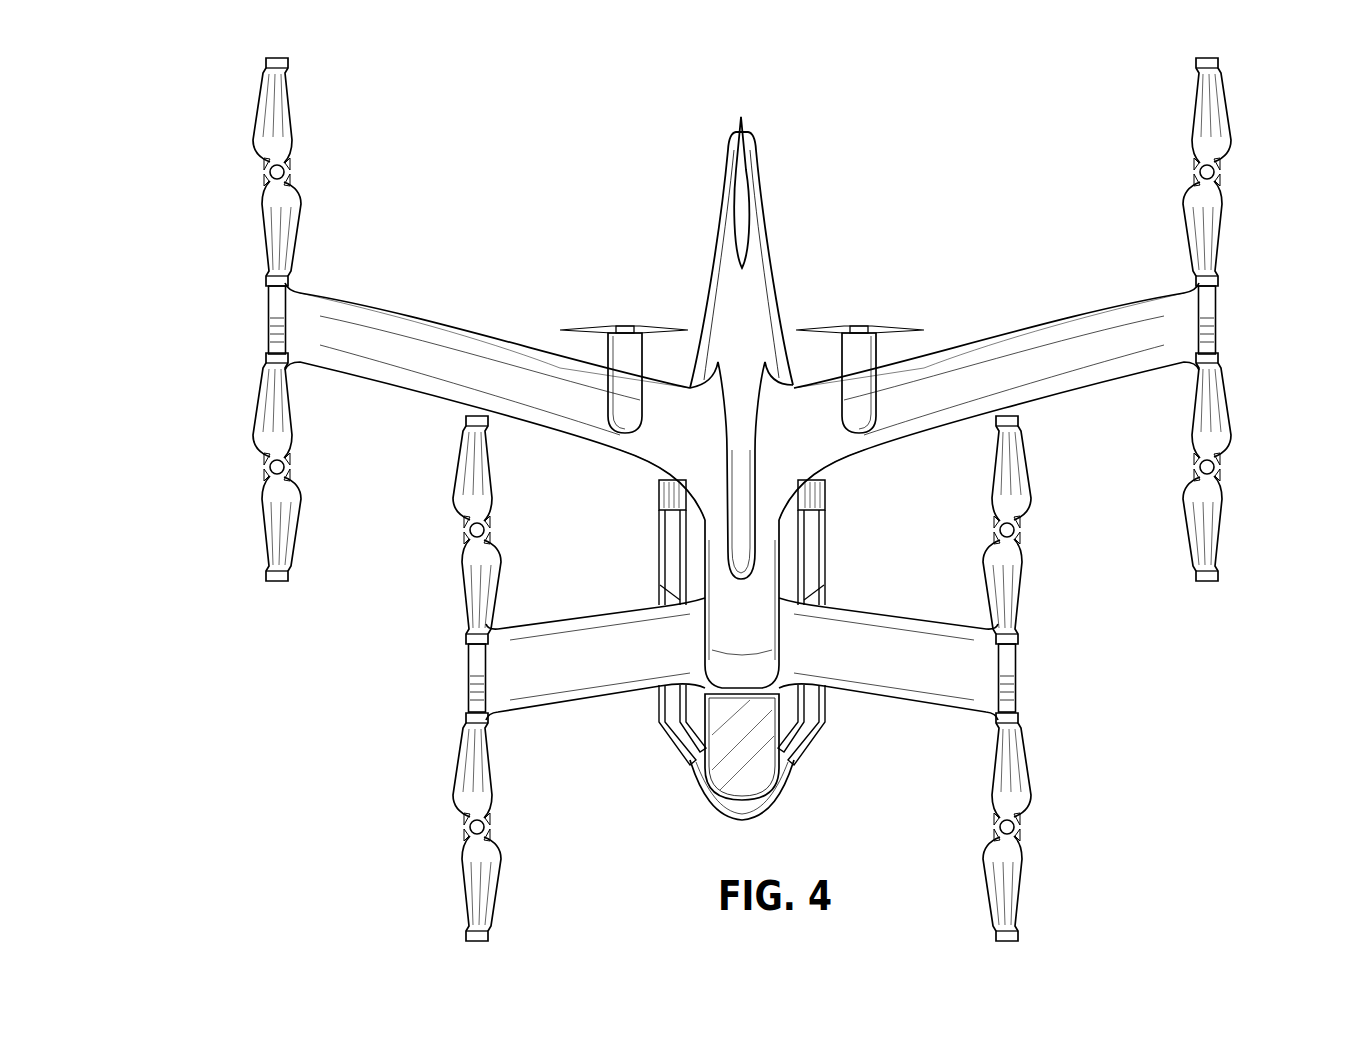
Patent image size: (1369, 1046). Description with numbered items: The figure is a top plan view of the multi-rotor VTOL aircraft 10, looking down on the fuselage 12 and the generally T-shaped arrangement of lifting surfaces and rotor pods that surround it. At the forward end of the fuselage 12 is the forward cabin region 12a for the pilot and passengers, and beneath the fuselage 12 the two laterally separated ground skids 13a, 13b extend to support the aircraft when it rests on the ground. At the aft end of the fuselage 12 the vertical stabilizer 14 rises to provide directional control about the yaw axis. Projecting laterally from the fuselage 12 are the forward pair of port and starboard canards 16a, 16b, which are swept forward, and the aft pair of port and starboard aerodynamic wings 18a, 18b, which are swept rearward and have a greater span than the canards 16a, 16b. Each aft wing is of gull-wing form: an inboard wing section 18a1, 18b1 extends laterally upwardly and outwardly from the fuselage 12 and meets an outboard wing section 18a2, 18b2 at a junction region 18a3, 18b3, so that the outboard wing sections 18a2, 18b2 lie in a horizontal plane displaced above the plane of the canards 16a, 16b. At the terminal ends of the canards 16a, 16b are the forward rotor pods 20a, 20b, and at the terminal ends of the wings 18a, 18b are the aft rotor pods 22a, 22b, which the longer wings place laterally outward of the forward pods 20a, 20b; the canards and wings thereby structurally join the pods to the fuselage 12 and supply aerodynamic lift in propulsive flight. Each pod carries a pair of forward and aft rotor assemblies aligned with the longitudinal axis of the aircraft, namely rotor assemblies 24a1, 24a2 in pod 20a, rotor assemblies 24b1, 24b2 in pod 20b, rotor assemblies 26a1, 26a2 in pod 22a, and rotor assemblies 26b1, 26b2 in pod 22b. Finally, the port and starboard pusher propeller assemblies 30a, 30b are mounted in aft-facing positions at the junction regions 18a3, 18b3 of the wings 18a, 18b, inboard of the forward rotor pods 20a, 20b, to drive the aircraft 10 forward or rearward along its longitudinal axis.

The VTOL aircraft 10 is at (898, 148).
The fuselage 12 is at (757, 635).
The forward cabin region 12a is at (706, 787).
The ground skid 13a is at (827, 747).
The ground skid 13b is at (660, 717).
The vertical stabilizer 14 is at (742, 203).
The port canard 16a is at (910, 667).
The starboard canard 16b is at (610, 667).
The port aerodynamic wing 18a is at (1045, 370).
The inboard wing section 18a1 is at (807, 455).
The outboard wing section 18a2 is at (1091, 331).
The junction region 18a3 is at (944, 490).
The starboard aerodynamic wing 18b is at (478, 373).
The inboard wing section 18b1 is at (675, 448).
The outboard wing section 18b2 is at (393, 331).
The junction region 18b3 is at (613, 452).
The forward rotor pod 20a is at (1007, 663).
The forward rotor pod 20b is at (481, 658).
The aft rotor pod 22a is at (1208, 303).
The aft rotor pod 22b is at (277, 302).
The forward side rotor assembly 24a1 is at (1024, 835).
The aft side rotor assembly 24a2 is at (1024, 538).
The forward side rotor assembly 24b1 is at (462, 834).
The aft side rotor assembly 24b2 is at (460, 538).
The forward side rotor assembly 26a1 is at (1224, 475).
The aft side rotor assembly 26a2 is at (1226, 182).
The forward side rotor assembly 26b1 is at (256, 481).
The aft side rotor assembly 26b2 is at (296, 158).
The port pusher propeller assembly 30a is at (857, 353).
The starboard pusher propeller assembly 30b is at (627, 353).